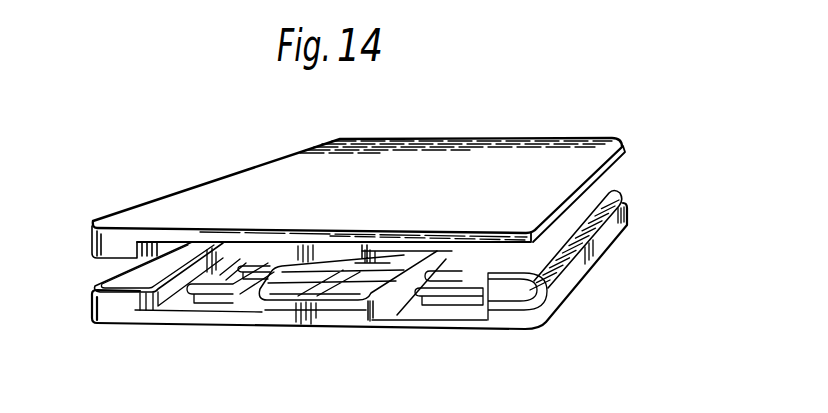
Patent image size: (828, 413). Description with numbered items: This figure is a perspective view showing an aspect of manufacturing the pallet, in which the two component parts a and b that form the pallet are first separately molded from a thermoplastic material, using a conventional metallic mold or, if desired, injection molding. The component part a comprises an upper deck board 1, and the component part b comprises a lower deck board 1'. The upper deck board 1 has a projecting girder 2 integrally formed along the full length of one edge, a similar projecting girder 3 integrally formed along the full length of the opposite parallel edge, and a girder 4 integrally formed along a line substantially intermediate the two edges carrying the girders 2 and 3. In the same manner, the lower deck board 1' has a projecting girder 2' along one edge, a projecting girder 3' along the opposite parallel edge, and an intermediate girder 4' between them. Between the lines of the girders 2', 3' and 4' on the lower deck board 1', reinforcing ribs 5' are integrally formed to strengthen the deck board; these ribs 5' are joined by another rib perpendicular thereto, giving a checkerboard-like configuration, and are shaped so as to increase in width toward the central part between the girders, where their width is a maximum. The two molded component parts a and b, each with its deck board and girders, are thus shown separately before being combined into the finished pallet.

The upper deck board 1 is at (357, 168).
The component part a is at (507, 149).
The projecting girder 2 is at (108, 221).
The projecting girder 3 is at (591, 189).
The girder 4 is at (334, 193).
The lower deck board 1' is at (359, 281).
The component part b is at (418, 330).
The projecting girder 2' is at (159, 305).
The projecting girder 3' is at (559, 256).
The girder 4' is at (352, 305).
The reinforcing rib 5' is at (330, 313).